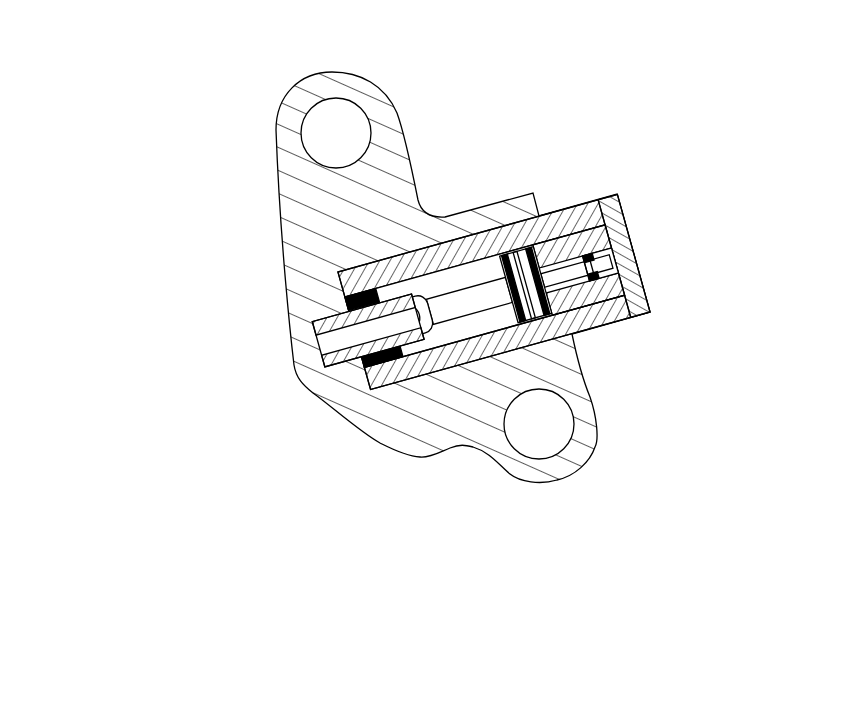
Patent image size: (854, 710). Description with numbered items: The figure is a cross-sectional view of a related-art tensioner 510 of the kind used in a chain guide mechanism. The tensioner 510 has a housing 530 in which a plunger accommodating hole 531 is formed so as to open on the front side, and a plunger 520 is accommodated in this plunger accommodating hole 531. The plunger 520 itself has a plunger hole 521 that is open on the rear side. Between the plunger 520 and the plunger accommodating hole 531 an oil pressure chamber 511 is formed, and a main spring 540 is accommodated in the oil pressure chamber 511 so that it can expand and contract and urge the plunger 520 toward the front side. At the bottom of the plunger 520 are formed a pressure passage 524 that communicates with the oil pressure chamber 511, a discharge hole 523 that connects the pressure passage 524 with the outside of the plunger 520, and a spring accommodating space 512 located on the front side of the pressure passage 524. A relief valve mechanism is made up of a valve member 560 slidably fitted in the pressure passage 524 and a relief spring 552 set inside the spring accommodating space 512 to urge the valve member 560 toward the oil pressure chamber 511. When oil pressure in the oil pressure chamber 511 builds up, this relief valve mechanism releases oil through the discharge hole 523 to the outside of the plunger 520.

The tensioner 510 is at (190, 98).
The plunger 520 is at (583, 196).
The housing 530 is at (315, 207).
The plunger accommodating hole 531 is at (335, 291).
The main spring 540 is at (387, 390).
The relief spring 552 is at (590, 205).
The valve member 560 is at (613, 290).
The spring accommodating space 512 is at (608, 257).
The plunger hole 521 is at (480, 325).
The discharge hole 523 is at (553, 245).
The pressure passage 524 is at (514, 245).
The oil pressure chamber 511 is at (453, 332).